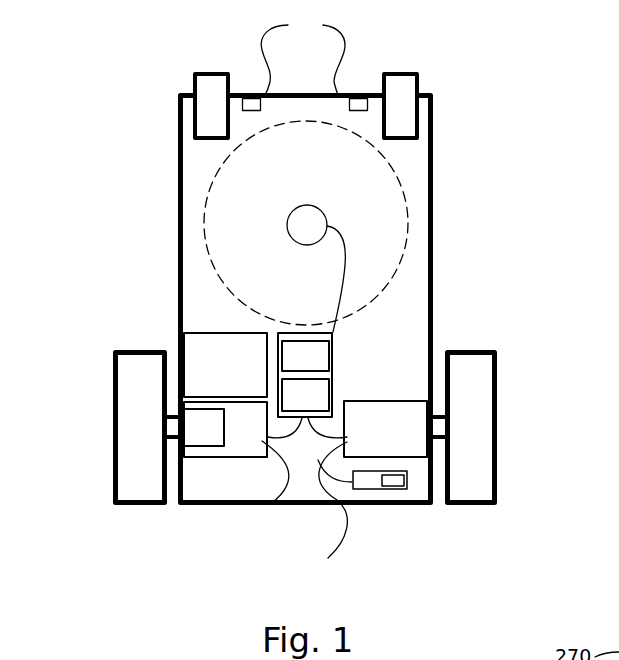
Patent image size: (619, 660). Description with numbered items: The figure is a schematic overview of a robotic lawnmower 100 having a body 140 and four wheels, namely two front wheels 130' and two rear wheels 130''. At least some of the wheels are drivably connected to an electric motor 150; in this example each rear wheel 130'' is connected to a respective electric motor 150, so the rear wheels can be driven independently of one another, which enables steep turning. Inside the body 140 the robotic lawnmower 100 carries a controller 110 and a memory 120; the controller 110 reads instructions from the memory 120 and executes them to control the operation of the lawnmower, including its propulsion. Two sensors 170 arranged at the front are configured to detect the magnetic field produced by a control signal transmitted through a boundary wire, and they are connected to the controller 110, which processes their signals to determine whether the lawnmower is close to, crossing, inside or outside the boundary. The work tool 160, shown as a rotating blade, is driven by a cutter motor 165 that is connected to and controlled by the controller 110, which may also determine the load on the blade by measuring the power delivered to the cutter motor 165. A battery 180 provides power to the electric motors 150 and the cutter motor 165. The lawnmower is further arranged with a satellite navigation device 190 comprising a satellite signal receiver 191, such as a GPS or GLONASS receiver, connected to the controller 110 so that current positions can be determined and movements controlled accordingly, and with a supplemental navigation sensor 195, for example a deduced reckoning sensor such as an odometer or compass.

The robotic lawnmower 100 is at (177, 137).
The controller 110 is at (335, 353).
The memory 120 is at (333, 397).
The front wheels 130' is at (365, 133).
The rear wheels 130'' is at (265, 475).
The body 140 is at (202, 503).
The electric motor 150 is at (273, 502).
The work tool 160 is at (212, 263).
The cutter motor 165 is at (288, 230).
The sensor 170 is at (303, 51).
The battery 180 is at (195, 353).
The satellite navigation device 190 is at (367, 490).
The satellite signal receiver 191 is at (388, 487).
The supplemental navigation sensor 195 is at (205, 447).